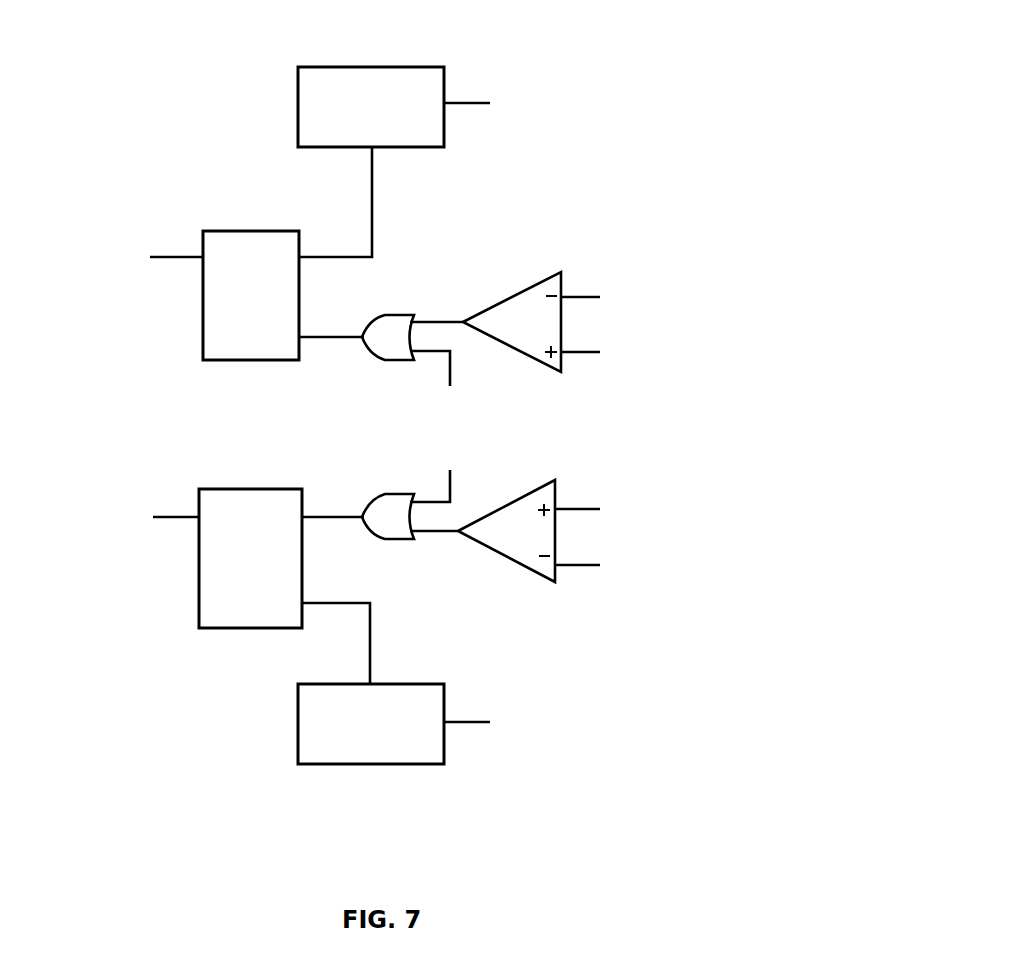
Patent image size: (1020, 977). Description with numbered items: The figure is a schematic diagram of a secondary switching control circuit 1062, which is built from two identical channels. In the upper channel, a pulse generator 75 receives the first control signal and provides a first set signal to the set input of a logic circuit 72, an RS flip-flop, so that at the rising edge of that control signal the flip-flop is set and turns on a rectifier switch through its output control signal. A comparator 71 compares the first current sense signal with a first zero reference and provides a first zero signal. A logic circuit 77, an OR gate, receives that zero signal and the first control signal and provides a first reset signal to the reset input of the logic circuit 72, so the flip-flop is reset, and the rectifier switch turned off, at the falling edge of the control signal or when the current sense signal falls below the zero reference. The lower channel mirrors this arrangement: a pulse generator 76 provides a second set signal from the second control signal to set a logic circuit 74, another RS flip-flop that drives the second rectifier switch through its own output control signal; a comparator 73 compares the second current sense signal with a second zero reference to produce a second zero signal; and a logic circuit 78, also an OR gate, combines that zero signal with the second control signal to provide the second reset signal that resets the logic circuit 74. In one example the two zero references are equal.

The secondary switching control circuit 1062 is at (622, 56).
The pulse generator 75 is at (393, 67).
The pulse generator 76 is at (418, 764).
The logic circuit 72 is at (264, 309).
The logic circuit 74 is at (265, 575).
The logic circuit 77 is at (403, 348).
The logic circuit 78 is at (403, 527).
The comparator 71 is at (545, 335).
The comparator 73 is at (544, 550).